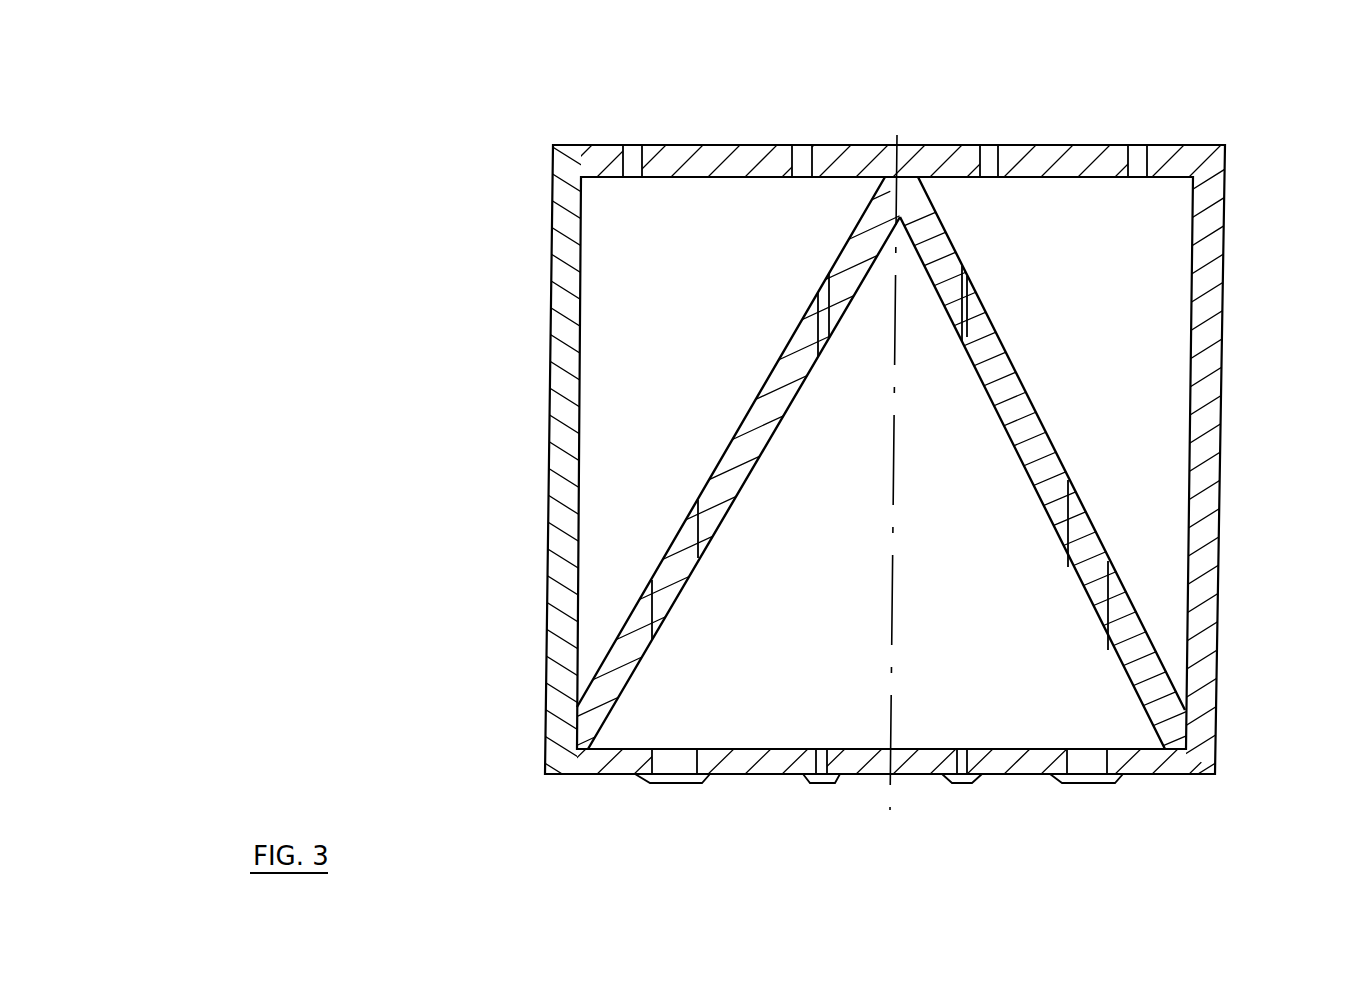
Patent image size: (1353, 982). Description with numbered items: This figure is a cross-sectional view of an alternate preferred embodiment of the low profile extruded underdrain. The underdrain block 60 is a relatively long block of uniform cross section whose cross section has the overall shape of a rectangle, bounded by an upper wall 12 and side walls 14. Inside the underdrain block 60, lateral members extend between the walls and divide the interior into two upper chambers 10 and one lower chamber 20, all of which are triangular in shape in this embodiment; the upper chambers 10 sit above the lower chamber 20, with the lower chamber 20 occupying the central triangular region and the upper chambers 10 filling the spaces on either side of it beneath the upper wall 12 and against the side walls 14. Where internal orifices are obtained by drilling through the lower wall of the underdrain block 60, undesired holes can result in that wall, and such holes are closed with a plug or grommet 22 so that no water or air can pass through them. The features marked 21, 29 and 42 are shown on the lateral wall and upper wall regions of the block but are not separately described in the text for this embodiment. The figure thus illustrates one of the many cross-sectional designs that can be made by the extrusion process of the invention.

The upper chamber 10 is at (891, 452).
The upper wall 12 is at (903, 123).
The side wall 14 is at (545, 657).
The lower chamber 20 is at (886, 398).
The reflector wall 21 is at (930, 235).
The plug or grommet 22 is at (646, 773).
The reflector wall 29 is at (668, 550).
The vent slot 42 is at (633, 145).
The underdrain block 60 is at (886, 466).